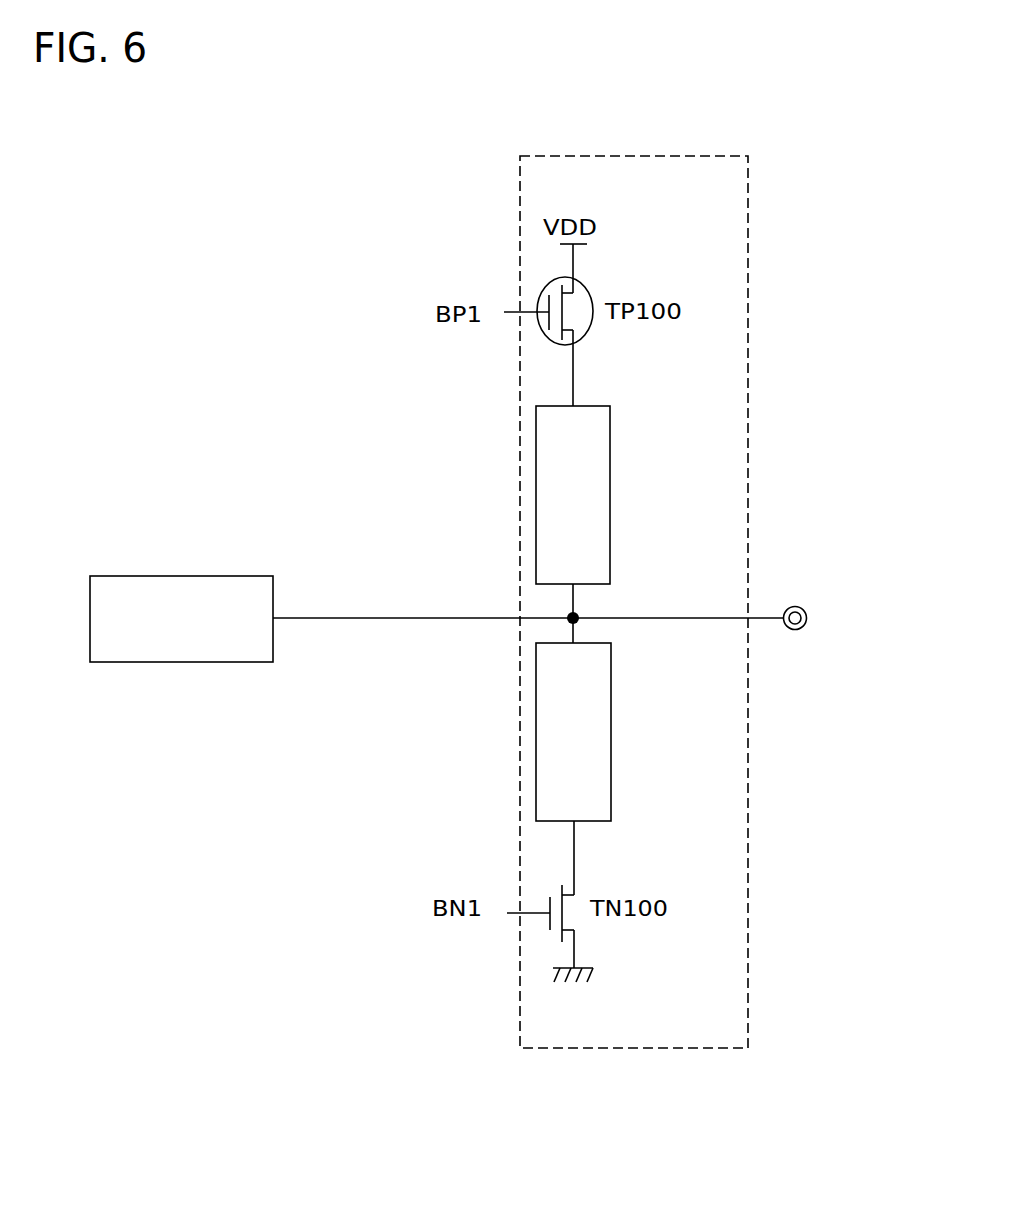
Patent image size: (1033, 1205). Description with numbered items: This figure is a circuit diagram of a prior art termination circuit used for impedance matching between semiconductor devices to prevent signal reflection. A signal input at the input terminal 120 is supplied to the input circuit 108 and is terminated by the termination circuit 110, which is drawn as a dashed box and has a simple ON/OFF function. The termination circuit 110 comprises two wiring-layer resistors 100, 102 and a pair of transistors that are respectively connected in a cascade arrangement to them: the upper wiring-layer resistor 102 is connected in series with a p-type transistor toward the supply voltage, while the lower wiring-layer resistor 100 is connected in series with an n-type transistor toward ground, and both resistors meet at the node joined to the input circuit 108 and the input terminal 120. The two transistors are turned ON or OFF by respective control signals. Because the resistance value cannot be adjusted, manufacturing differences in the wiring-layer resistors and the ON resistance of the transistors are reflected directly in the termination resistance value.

The termination circuit 110 is at (748, 208).
The wiring-layer resistor 102 is at (610, 486).
The wiring-layer resistor 100 is at (611, 731).
The input circuit 108 is at (255, 576).
The input terminal 120 is at (802, 608).